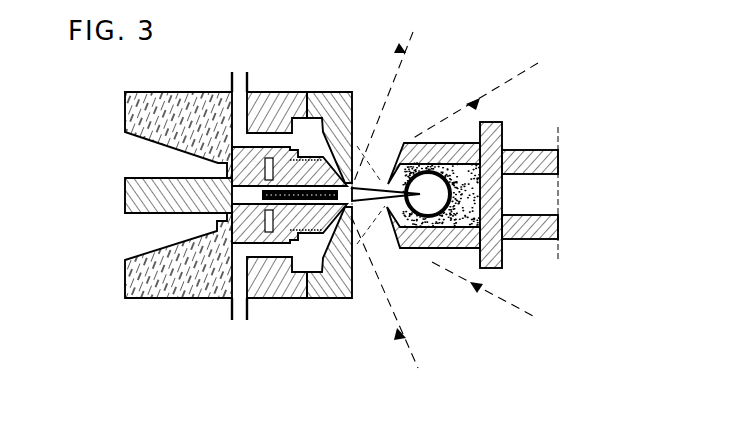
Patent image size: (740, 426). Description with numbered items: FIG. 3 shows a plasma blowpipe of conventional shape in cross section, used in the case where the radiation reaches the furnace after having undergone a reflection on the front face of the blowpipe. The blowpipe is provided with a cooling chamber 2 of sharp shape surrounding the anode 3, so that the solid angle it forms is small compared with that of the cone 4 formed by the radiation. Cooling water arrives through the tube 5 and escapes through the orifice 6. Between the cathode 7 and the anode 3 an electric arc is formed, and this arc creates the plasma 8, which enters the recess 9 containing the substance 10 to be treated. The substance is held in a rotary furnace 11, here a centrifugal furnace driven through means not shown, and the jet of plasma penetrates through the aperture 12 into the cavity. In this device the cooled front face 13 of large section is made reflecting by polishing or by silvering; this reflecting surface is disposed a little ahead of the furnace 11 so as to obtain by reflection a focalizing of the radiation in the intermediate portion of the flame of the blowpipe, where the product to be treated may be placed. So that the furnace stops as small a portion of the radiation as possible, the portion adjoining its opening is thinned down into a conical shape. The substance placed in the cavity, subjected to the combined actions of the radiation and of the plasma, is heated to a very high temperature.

The cooling chamber 2 is at (311, 300).
The anode 3 is at (346, 300).
The cone 4 is at (377, 92).
The tube 5 is at (240, 72).
The orifice 6 is at (242, 312).
The cathode 7 is at (332, 104).
The plasma 8 is at (380, 187).
The recess 9 is at (427, 248).
The substance to be treated 10 is at (462, 250).
The rotary furnace 11 is at (443, 145).
The aperture 12 is at (383, 204).
The cooled front face 13 is at (355, 146).